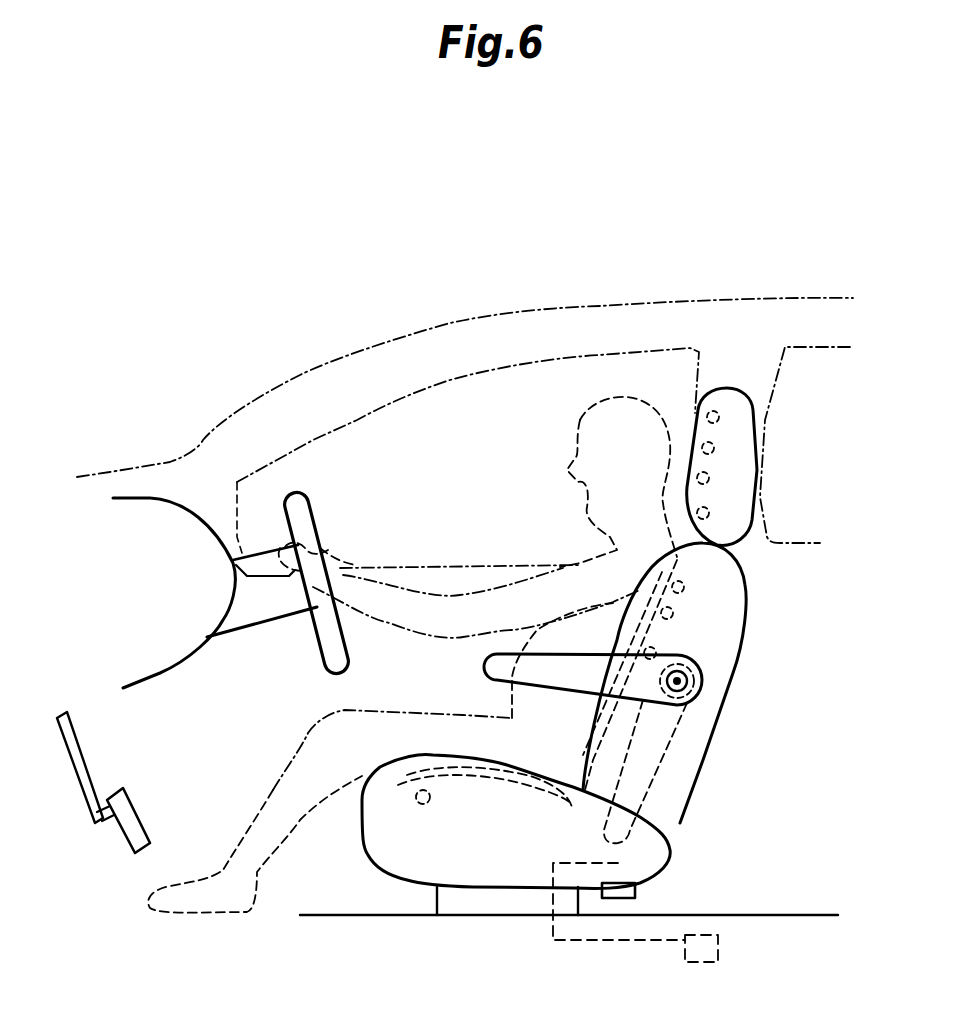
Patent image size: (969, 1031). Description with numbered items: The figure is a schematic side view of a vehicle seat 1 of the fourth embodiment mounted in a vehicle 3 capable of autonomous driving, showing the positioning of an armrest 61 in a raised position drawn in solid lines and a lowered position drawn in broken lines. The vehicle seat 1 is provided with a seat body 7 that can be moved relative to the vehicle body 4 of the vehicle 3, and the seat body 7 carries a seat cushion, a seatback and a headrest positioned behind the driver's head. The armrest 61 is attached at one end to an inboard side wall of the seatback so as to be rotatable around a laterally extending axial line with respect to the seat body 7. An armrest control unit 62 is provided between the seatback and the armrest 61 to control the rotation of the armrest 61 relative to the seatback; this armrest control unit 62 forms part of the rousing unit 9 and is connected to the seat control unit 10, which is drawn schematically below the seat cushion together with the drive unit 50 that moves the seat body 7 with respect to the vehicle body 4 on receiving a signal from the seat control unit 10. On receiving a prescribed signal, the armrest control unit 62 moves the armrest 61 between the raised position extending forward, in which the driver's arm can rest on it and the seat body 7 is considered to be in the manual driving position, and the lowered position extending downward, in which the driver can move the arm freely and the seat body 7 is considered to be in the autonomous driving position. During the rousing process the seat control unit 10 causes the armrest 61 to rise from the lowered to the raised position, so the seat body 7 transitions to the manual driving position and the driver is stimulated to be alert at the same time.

The vehicle seat 1 is at (745, 380).
The vehicle 3 is at (343, 328).
The vehicle body 4 is at (493, 320).
The seat body 7 is at (772, 585).
The armrest 61 is at (670, 658).
The armrest control unit 62 is at (700, 697).
The rousing unit 9 is at (677, 681).
The seat control unit 10 is at (637, 890).
The drive unit 50 is at (718, 948).